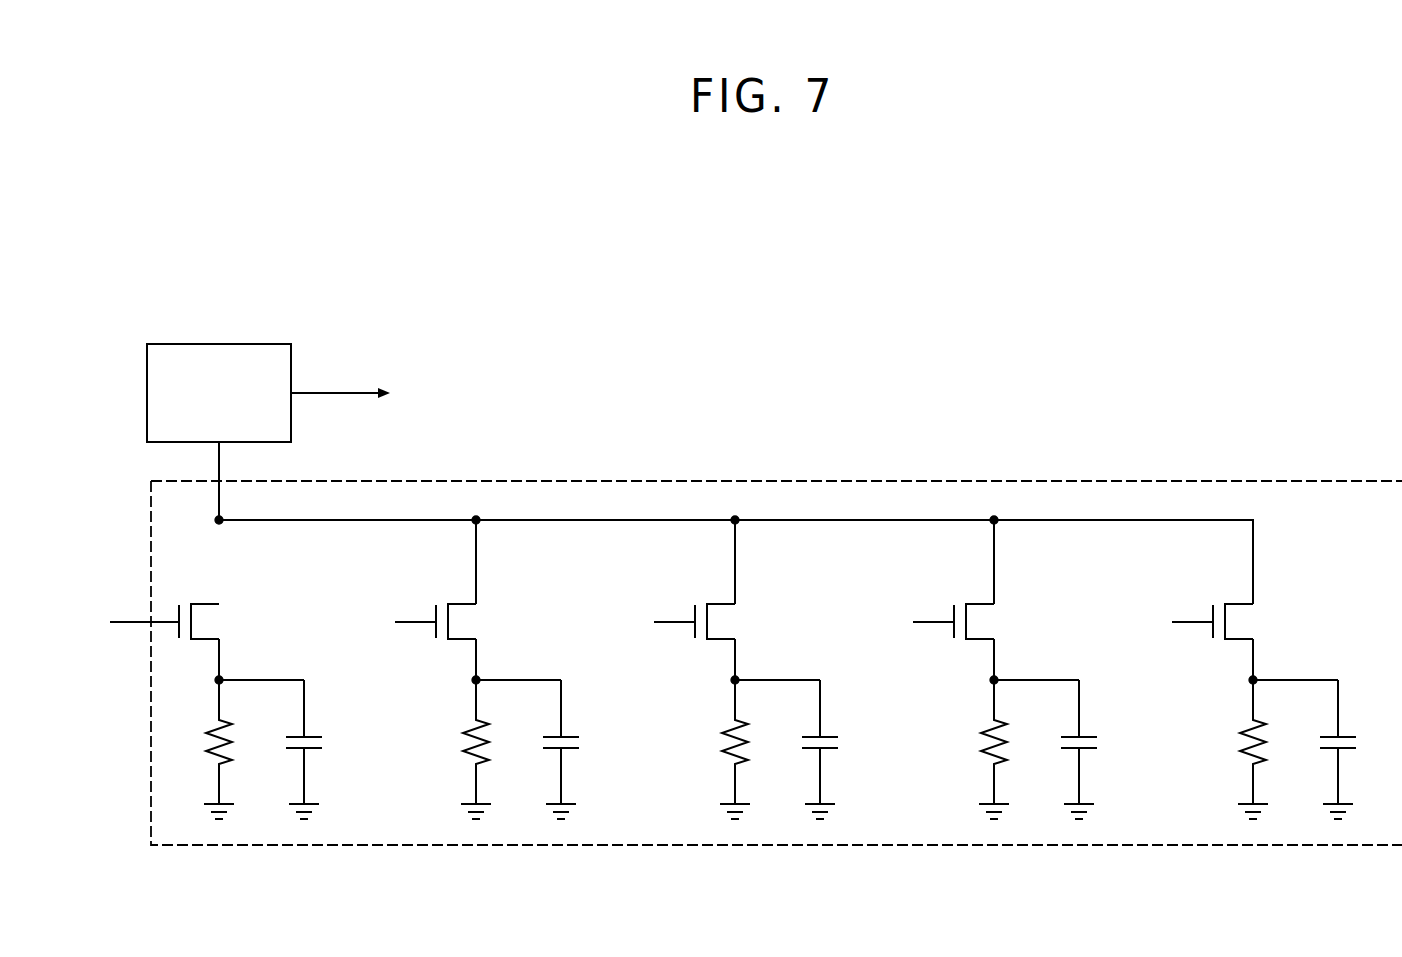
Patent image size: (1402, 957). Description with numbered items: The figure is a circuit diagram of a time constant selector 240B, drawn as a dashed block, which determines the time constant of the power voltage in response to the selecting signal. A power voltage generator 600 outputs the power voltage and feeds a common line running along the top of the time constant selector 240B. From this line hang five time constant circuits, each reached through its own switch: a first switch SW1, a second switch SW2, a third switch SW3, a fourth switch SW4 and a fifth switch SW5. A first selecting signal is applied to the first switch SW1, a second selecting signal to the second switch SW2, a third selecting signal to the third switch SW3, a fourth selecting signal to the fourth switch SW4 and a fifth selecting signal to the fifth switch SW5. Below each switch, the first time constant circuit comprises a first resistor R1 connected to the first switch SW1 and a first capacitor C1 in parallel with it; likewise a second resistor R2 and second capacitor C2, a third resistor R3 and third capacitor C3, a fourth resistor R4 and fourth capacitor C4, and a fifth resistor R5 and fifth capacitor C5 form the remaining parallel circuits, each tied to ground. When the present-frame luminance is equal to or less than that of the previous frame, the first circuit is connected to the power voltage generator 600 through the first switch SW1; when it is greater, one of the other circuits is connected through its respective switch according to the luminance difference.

The power voltage generator 600 is at (147, 393).
The time constant selector 240B is at (775, 481).
The first switch SW1 is at (172, 612).
The second switch SW2 is at (445, 612).
The third switch SW3 is at (704, 612).
The fourth switch SW4 is at (963, 612).
The fifth switch SW5 is at (1222, 612).
The first resistor R1 is at (203, 749).
The second resistor R2 is at (460, 749).
The third resistor R3 is at (719, 749).
The fourth resistor R4 is at (978, 749).
The fifth resistor R5 is at (1237, 749).
The first capacitor C1 is at (319, 749).
The second capacitor C2 is at (576, 749).
The third capacitor C3 is at (835, 749).
The fourth capacitor C4 is at (1094, 749).
The fifth capacitor C5 is at (1353, 749).